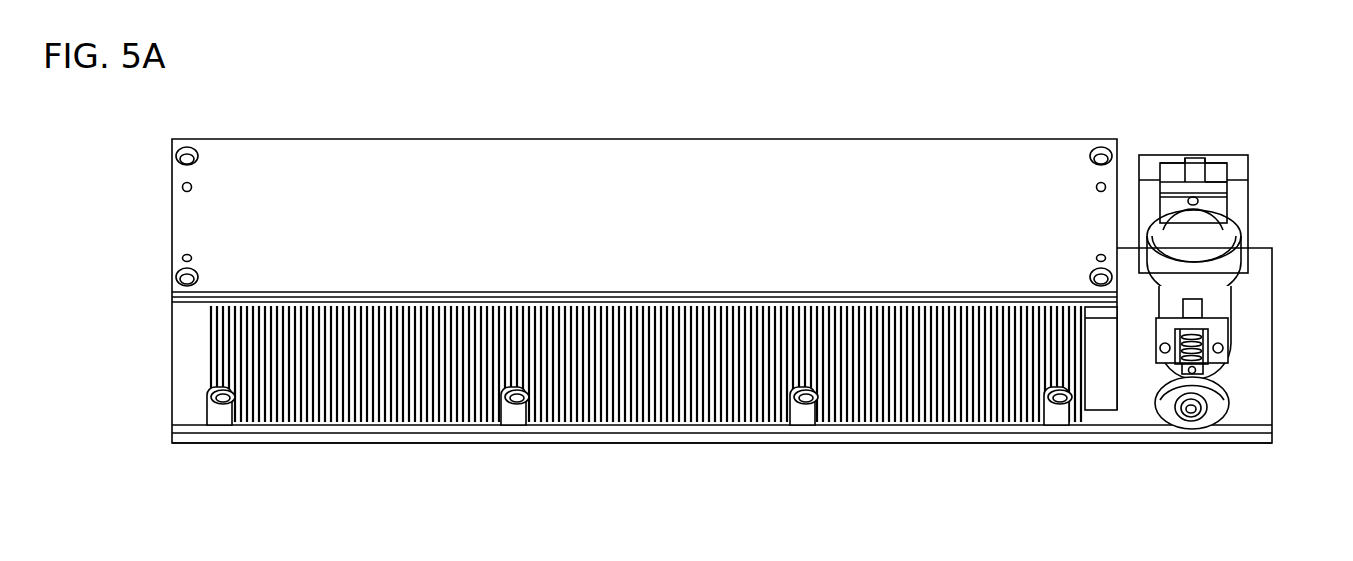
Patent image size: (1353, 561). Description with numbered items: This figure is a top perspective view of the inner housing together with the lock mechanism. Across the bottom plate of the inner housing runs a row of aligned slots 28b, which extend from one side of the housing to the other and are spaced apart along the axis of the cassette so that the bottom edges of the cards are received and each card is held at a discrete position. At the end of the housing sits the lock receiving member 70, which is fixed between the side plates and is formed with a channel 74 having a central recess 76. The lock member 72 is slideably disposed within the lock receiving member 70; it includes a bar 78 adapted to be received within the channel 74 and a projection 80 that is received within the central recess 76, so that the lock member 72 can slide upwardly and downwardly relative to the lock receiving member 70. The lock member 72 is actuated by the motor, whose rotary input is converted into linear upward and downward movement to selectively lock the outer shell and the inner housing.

The slots 28b is at (450, 413).
The lock receiving member 70 is at (1150, 160).
The lock member 72 is at (1236, 199).
The channel 74 is at (1220, 172).
The central recess 76 is at (1202, 158).
The bar 78 is at (1167, 190).
The projection 80 is at (1192, 182).